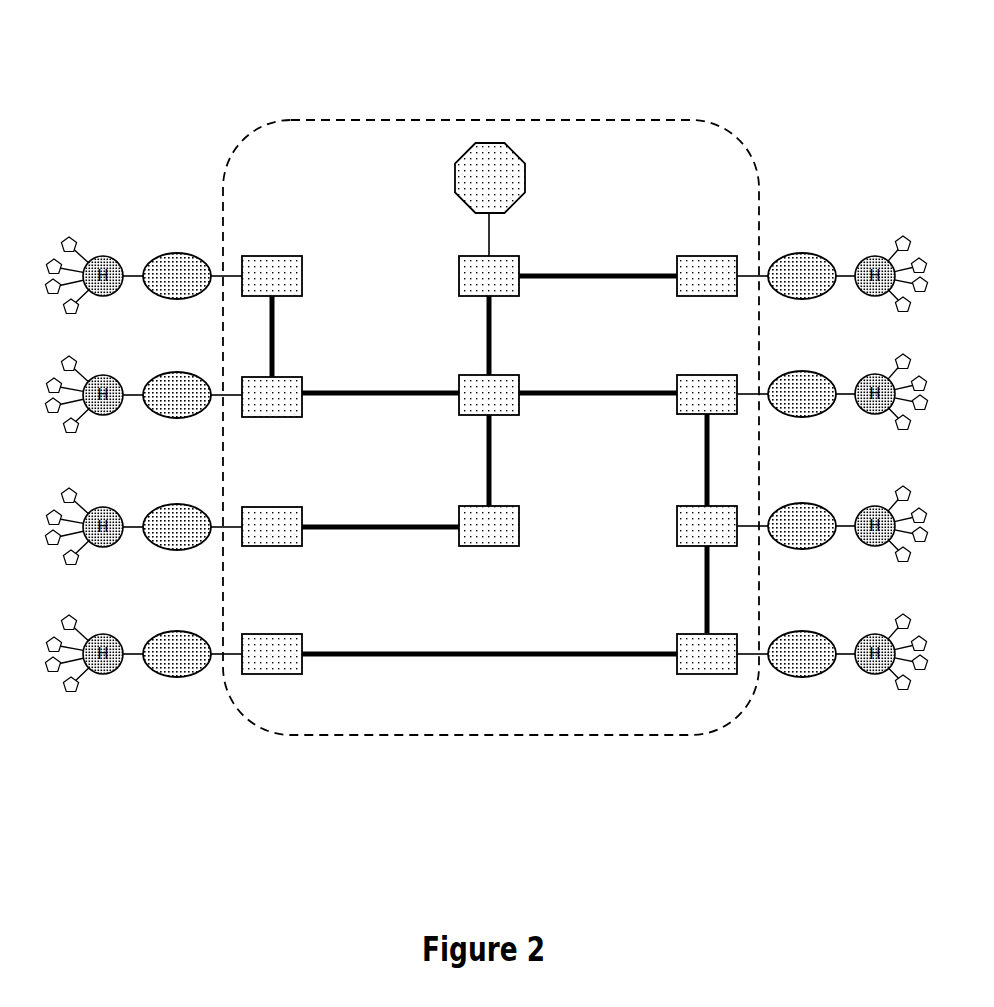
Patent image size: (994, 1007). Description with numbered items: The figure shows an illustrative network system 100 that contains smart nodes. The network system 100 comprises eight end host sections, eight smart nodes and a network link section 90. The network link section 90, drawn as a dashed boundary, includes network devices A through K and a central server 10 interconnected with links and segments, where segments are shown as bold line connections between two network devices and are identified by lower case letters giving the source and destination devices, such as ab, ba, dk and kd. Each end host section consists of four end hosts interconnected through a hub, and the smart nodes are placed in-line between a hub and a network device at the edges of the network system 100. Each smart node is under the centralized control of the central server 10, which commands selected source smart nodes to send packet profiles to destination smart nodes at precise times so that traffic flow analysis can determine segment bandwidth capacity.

The network system 100 is at (178, 813).
The network link section 90 is at (641, 120).
The central server 10 is at (504, 199).